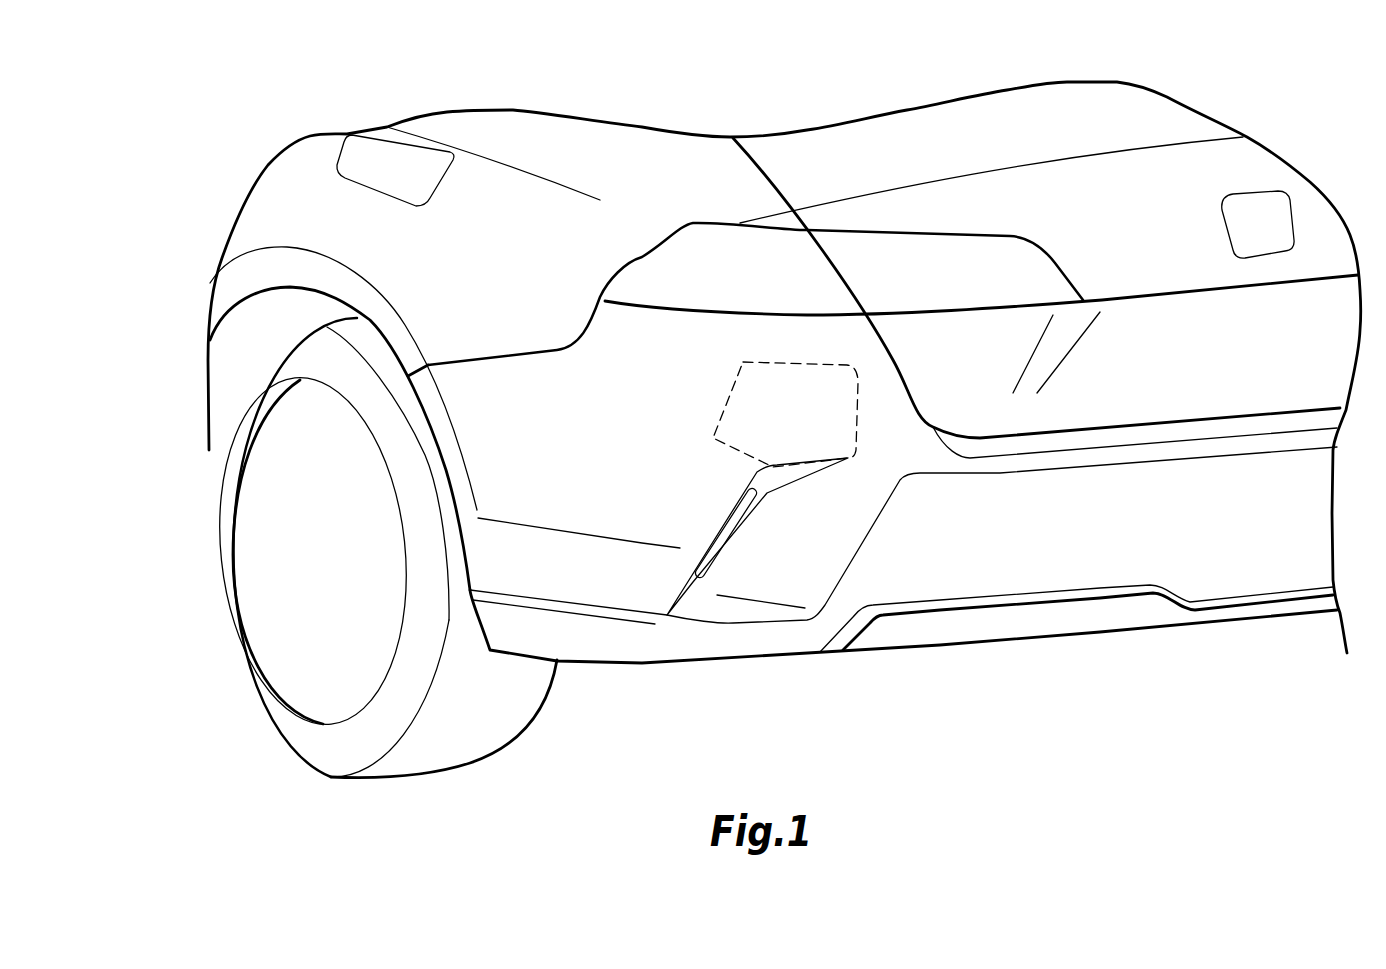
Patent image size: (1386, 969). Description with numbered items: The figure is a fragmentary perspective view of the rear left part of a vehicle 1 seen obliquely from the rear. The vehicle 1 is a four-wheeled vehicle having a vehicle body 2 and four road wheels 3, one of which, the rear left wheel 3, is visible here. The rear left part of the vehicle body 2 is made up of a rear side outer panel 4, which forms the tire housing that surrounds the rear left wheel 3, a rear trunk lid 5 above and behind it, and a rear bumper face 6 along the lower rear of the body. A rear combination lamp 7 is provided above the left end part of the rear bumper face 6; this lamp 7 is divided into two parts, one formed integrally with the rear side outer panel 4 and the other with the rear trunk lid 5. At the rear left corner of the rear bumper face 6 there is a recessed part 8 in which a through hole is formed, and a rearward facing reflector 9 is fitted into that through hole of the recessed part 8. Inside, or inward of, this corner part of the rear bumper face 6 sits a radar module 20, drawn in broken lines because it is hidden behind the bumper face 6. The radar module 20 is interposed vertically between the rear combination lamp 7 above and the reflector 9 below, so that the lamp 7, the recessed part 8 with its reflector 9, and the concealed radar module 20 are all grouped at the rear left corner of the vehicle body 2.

The vehicle 1 is at (826, 94).
The vehicle body 2 is at (248, 164).
The road wheel 3 is at (220, 524).
The rear side outer panel 4 is at (517, 138).
The rear trunk lid 5 is at (1150, 113).
The rear bumper face 6 is at (1250, 557).
The rear combination lamp 7 is at (713, 270).
The recessed part 8 is at (760, 553).
The reflector 9 is at (716, 558).
The radar module 20 is at (727, 398).